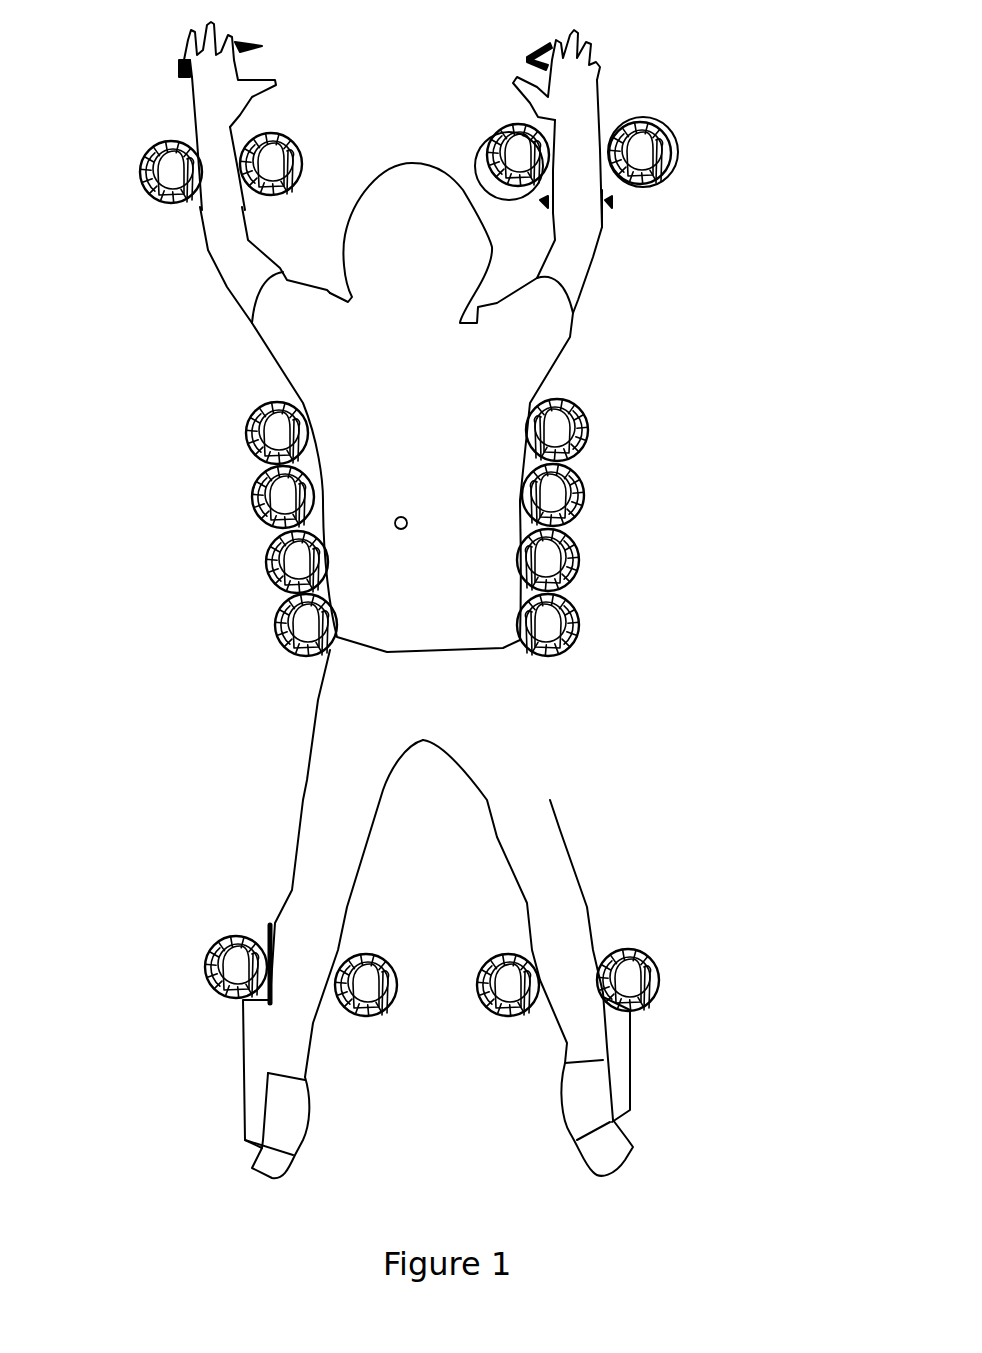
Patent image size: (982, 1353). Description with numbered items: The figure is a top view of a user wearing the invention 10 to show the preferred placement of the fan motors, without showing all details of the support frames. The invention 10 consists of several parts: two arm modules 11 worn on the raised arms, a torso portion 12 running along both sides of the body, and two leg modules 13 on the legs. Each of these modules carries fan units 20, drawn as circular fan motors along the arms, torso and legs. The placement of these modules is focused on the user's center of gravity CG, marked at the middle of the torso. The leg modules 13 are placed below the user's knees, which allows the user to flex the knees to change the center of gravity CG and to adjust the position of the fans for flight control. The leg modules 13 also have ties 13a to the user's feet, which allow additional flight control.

The invention 10 is at (759, 156).
The arm modules 11 is at (147, 223).
The torso portion 12 is at (223, 410).
The leg modules 13 is at (497, 1018).
The ties 13a is at (244, 1096).
The thruster units 20 is at (443, 585).
The center of gravity cg is at (405, 528).